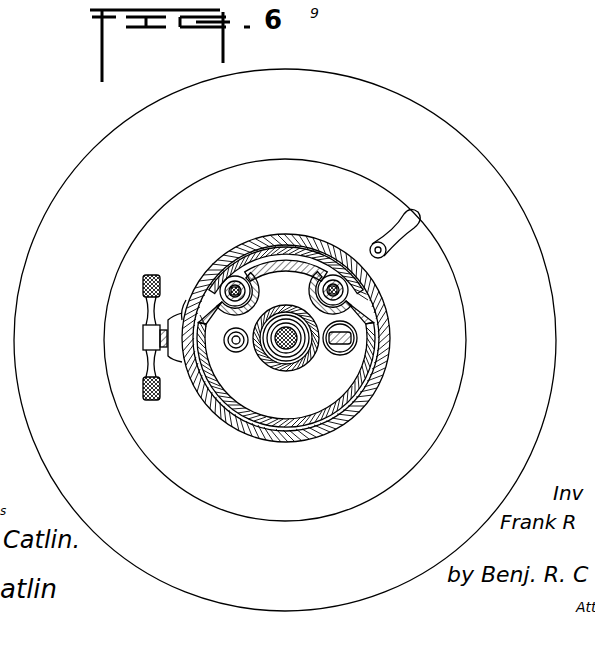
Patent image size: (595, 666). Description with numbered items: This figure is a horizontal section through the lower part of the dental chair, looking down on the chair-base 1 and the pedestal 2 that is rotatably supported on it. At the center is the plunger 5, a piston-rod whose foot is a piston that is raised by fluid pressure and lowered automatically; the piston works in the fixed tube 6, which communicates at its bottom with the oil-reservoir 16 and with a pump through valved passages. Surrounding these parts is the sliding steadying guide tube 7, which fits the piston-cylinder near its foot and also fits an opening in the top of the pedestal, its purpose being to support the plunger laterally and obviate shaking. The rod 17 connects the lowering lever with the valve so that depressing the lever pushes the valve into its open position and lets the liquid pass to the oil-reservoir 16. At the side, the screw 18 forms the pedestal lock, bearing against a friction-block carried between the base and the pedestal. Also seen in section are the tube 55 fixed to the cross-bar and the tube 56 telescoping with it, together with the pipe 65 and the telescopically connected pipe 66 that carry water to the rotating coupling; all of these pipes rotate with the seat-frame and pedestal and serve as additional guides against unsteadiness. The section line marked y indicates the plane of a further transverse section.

The chair-base 1 is at (0, 368).
The pedestal 2 is at (388, 323).
The plunger 5 is at (288, 352).
The fixed tube 6 is at (275, 363).
The sliding steadying guide tube 7 is at (344, 352).
The oil-reservoir 16 is at (292, 245).
The rod 17 is at (237, 352).
The screw 18 is at (162, 353).
The tube 55 is at (368, 288).
The telescoping tube 56 is at (336, 278).
The pipe 65 is at (204, 279).
The pipe 66 is at (235, 275).
The inner band y is at (365, 400).